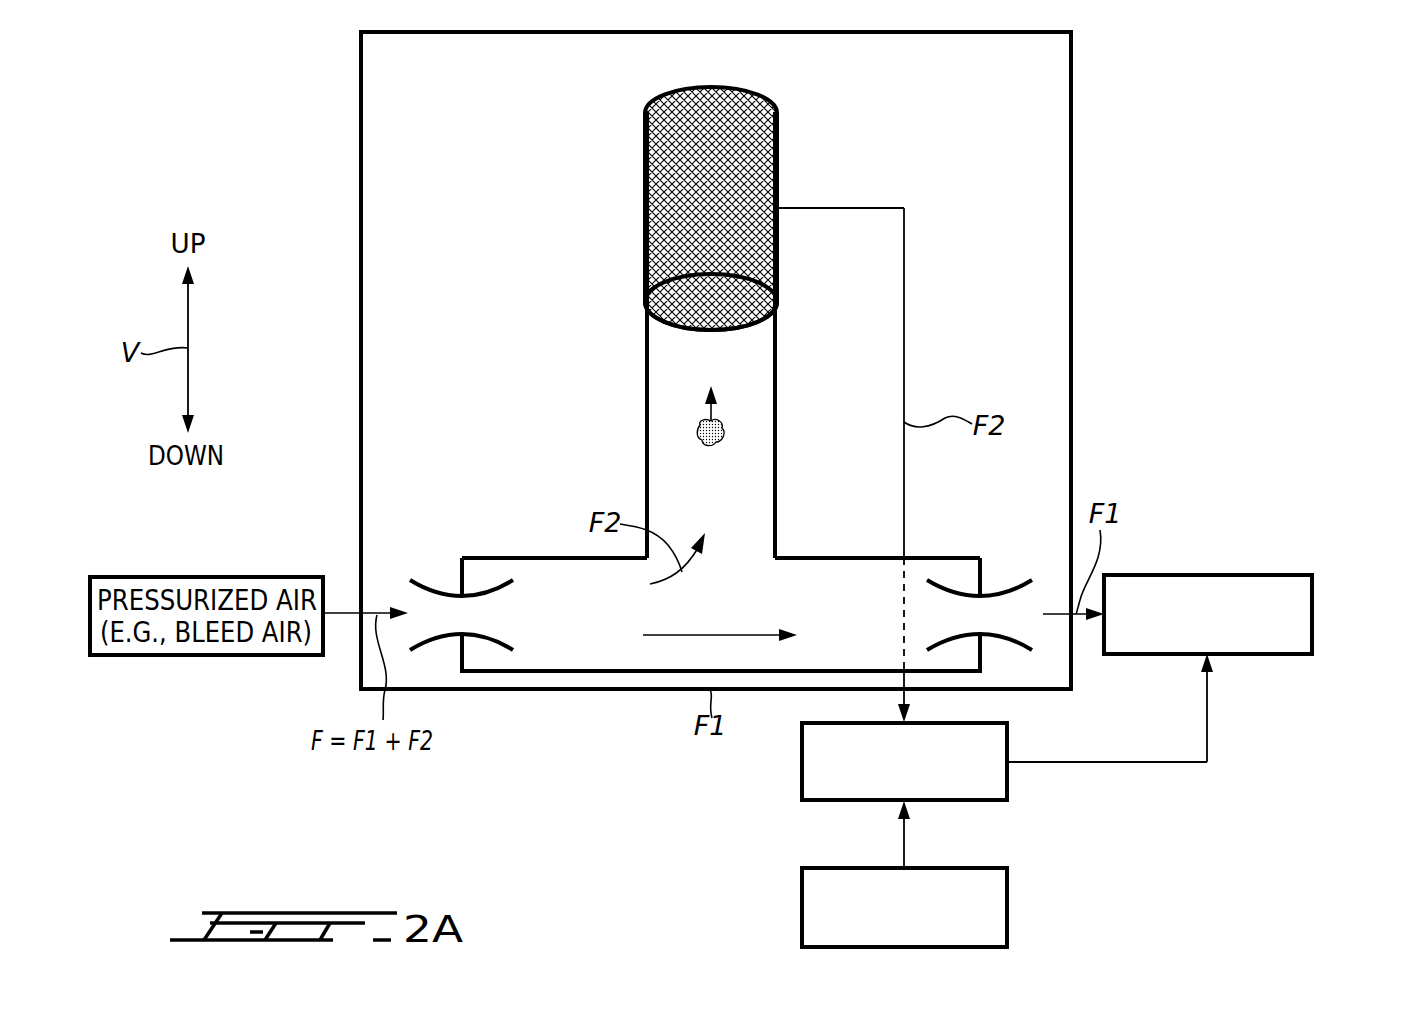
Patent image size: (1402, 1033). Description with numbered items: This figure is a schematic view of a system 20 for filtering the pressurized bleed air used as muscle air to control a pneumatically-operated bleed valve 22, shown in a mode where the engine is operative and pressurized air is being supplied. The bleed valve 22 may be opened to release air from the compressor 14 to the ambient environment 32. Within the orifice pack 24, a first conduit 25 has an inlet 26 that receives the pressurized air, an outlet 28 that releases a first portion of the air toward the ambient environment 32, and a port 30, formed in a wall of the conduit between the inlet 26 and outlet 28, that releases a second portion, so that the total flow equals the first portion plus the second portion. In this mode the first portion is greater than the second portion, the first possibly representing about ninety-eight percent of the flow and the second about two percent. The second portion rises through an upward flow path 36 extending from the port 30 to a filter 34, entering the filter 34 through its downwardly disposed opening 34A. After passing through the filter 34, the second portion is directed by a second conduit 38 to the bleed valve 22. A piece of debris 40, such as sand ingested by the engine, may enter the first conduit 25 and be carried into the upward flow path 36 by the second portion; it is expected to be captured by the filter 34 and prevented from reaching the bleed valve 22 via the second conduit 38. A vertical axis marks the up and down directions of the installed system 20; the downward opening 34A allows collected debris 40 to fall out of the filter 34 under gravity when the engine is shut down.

The compressor 14 is at (802, 910).
The system 20 is at (300, 190).
The bleed valve 22 is at (802, 762).
The orifice pack 24 is at (361, 60).
The first conduit 25 is at (535, 588).
The inlet 26 is at (432, 607).
The outlet 28 is at (984, 616).
The port 30 is at (750, 548).
The ambient environment 32 is at (1312, 615).
The filter 34 is at (670, 196).
The opening 34A is at (662, 300).
The upward flow path 36 is at (660, 353).
The second conduit 38 is at (904, 282).
The debris 40 is at (700, 430).